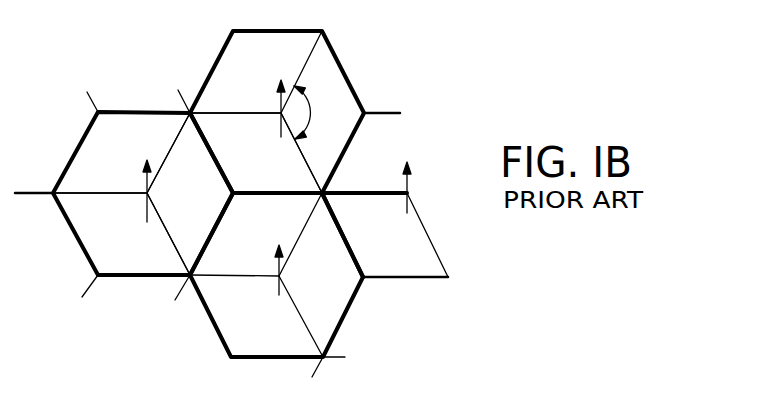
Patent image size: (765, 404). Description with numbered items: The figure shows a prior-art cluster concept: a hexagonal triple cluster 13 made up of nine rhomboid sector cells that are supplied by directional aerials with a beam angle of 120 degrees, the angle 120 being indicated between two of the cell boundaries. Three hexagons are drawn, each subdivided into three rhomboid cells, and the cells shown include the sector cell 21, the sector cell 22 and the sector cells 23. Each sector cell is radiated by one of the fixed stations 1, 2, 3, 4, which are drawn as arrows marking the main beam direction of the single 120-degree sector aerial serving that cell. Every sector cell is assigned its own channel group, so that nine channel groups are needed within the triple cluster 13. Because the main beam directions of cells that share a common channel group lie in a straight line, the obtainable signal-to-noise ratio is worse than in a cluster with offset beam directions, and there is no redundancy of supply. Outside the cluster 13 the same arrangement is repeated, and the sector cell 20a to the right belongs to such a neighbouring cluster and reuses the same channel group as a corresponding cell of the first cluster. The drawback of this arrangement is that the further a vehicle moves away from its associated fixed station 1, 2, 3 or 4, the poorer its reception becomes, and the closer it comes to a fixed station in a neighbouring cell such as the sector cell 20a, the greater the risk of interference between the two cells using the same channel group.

The cluster 13 is at (377, 68).
The sector cell 21 is at (121, 152).
The sector cell 22 is at (190, 194).
The sector cell 23 is at (187, 194).
The sector cell 20a is at (385, 235).
The fixed station 1 is at (151, 181).
The fixed station 2 is at (256, 112).
The fixed station 3 is at (256, 275).
The fixed station 4 is at (414, 180).
The 120-degree angle 120 is at (311, 113).